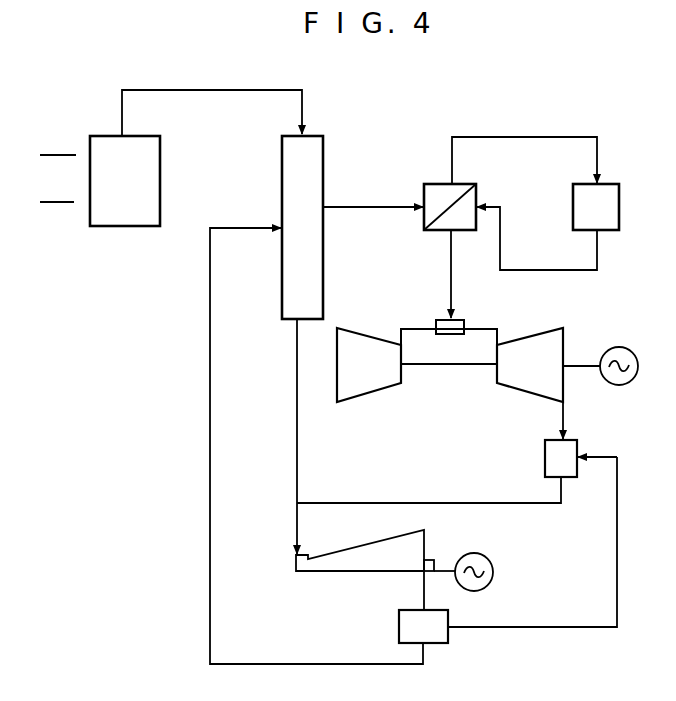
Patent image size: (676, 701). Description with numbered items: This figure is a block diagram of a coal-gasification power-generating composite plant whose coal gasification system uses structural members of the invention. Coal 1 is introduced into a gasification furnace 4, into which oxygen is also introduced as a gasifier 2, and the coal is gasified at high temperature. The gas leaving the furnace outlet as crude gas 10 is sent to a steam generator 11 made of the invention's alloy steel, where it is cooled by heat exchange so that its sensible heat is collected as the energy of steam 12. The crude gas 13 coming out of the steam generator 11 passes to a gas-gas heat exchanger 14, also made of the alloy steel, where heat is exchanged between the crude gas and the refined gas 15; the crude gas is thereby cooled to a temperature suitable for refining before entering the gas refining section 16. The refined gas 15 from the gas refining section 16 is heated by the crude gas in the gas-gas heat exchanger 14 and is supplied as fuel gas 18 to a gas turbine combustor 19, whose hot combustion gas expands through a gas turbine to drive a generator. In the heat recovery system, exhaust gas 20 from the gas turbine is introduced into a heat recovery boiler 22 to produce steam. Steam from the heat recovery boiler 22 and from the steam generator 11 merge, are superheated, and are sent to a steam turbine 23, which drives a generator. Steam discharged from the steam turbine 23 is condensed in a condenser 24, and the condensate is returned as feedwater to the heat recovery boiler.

The coal 1 is at (53, 153).
The gasifier 2 is at (56, 203).
The gasification furnace 4 is at (121, 228).
The crude gas 10 is at (214, 89).
The steam generator 11 is at (302, 227).
The steam 12 is at (296, 360).
The crude gas 13 is at (360, 205).
The gas-gas heat exchanger 14 is at (470, 185).
The refined gas 15 is at (519, 271).
The gas refining section 16 is at (619, 190).
The fuel gas 18 is at (447, 283).
The gas turbine combustor 19 is at (442, 365).
The exhaust gas 20 is at (565, 418).
The heat recovery boiler 22 is at (545, 453).
The steam turbine 23 is at (425, 541).
The condenser 24 is at (399, 626).